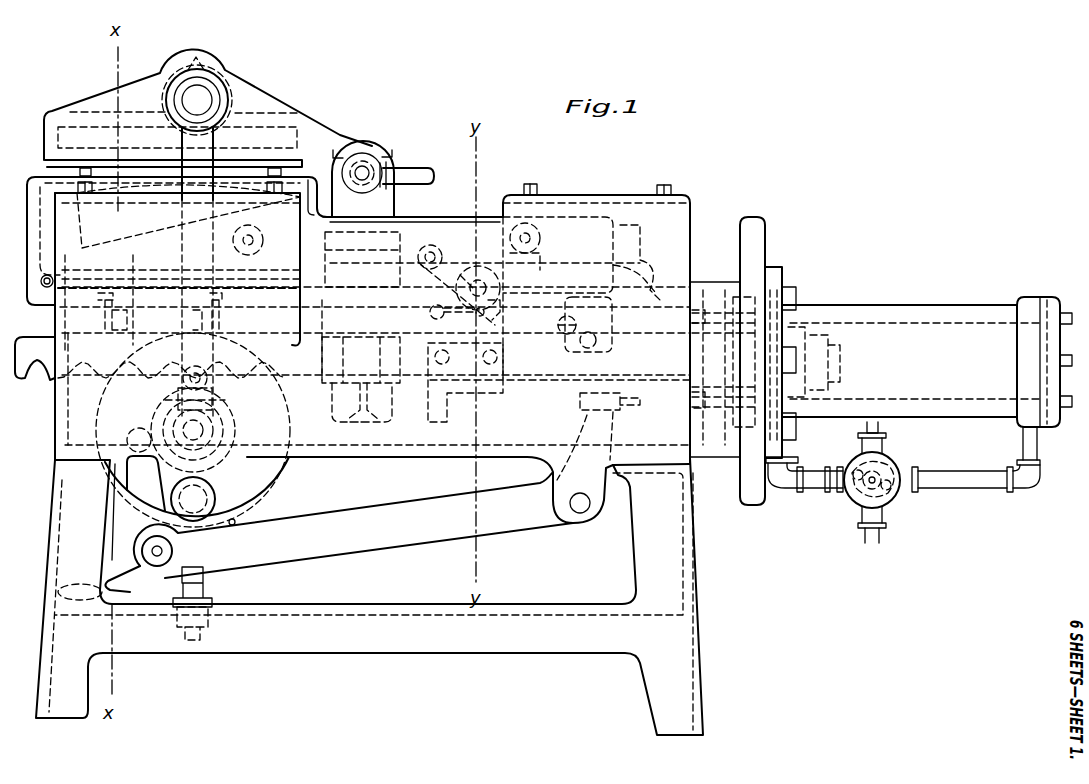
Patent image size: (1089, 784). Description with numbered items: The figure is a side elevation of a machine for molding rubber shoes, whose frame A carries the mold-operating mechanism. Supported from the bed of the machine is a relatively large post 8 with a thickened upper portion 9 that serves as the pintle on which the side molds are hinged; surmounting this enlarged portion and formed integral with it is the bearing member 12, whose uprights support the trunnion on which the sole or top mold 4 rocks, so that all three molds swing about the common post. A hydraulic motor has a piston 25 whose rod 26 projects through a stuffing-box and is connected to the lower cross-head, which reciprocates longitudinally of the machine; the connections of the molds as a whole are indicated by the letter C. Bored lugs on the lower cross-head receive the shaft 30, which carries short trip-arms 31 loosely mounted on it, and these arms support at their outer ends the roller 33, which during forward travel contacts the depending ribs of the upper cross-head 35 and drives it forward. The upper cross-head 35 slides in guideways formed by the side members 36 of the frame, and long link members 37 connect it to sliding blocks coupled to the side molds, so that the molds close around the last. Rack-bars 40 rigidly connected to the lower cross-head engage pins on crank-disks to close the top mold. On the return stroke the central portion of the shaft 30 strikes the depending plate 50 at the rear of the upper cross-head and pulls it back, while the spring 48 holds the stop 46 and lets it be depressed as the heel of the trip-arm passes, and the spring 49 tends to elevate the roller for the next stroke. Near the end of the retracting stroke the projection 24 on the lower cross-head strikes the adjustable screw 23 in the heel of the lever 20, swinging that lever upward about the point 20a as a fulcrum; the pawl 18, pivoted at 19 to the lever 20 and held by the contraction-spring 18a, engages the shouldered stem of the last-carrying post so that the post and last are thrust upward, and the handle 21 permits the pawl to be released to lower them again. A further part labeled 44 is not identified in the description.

The frame A is at (433, 451).
The sole-mold part 4 is at (208, 234).
The wedge 44 is at (200, 146).
The bearing member 12 is at (387, 204).
The long link members 37 is at (449, 216).
The upper cross-head 35 is at (583, 232).
The side members 36 is at (686, 226).
The thickened upper portion 9 is at (375, 248).
The roller 33 is at (439, 246).
The trip-arms 31 is at (457, 256).
The shaft 30 is at (490, 292).
The spring 49 is at (440, 311).
The spring 48 is at (566, 322).
The stop 46 is at (600, 320).
The depending plate 50 is at (653, 288).
The rod 26 is at (547, 375).
The projection 24 is at (448, 412).
The adjustable screw 23 is at (585, 407).
The post 8 is at (352, 357).
The rack-bars 40 is at (25, 383).
The pawl 18 is at (153, 500).
The contraction-spring 18a is at (247, 509).
The lever 20 is at (353, 525).
The fulcrum point 20a is at (584, 511).
The pivot 19 is at (160, 562).
The handle 21 is at (108, 580).
The piston 25 is at (927, 362).
The mold connections C is at (903, 482).